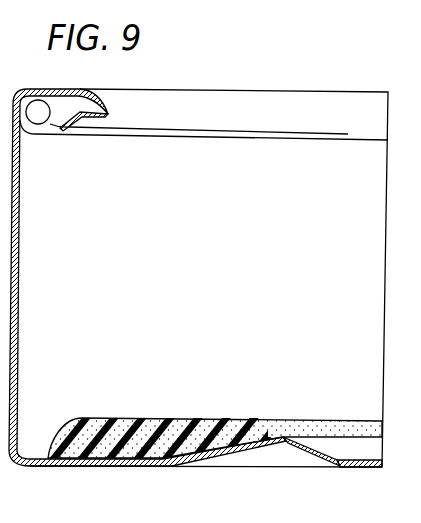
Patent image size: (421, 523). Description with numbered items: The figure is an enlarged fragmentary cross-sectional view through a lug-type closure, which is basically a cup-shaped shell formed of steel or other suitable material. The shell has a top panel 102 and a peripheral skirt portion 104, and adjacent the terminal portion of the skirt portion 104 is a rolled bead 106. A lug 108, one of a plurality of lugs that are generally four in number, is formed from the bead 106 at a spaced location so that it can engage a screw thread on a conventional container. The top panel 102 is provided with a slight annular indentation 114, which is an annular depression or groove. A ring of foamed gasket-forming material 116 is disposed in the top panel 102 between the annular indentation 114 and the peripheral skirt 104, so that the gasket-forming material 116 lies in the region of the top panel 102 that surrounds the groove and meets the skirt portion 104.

The top panel 102 is at (373, 490).
The peripheral skirt portion 104 is at (48, 263).
The rolled bead 106 is at (252, 65).
The lug 108 is at (133, 155).
The annular indentation 114 is at (267, 490).
The ring of foamed gasket-forming material 116 is at (138, 418).